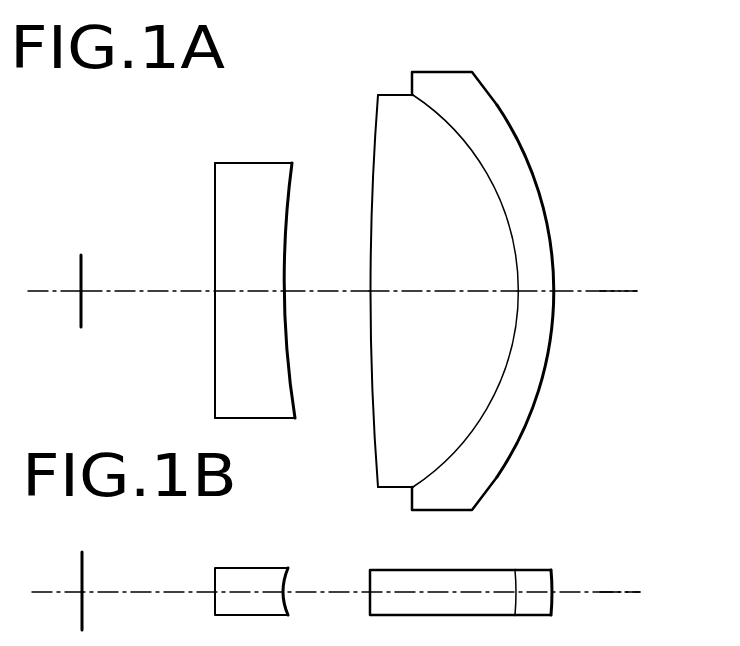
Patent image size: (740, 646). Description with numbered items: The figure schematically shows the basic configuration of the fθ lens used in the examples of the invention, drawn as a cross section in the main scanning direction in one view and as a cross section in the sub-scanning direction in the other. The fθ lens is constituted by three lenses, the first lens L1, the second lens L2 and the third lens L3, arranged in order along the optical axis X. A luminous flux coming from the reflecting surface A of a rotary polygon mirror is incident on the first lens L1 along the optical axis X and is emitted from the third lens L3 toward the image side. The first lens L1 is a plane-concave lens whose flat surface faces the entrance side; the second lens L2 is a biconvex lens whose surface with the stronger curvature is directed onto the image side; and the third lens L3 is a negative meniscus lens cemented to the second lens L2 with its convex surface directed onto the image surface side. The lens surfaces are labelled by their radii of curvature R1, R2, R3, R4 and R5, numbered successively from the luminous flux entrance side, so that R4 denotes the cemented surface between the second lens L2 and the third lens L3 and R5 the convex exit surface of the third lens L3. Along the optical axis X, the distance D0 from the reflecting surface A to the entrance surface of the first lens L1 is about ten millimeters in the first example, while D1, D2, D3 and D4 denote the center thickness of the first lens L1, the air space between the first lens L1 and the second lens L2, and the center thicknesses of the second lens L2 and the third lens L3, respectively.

In FIG. 1A, the first lens L1 is at (251, 264).
In FIG. 1B, the first lens L1 is at (253, 577).
In FIG. 1A, the second lens L2 is at (419, 262).
In FIG. 1B, the second lens L2 is at (435, 575).
In FIG. 1A, the third lens L3 is at (483, 264).
In FIG. 1B, the third lens L3 is at (537, 577).
In FIG. 1A, the radius of curvature of first lens surface R1 is at (215, 200).
In FIG. 1A, the radius of curvature of second lens surface R2 is at (292, 193).
In FIG. 1A, the radius of curvature of third lens surface R3 is at (373, 128).
In FIG. 1A, the radius of curvature of fourth lens surface R4 is at (428, 108).
In FIG. 1A, the radius of curvature of fifth lens surface R5 is at (498, 105).
In FIG. 1A, the distance from reflecting mirror surface to first lens D0 is at (135, 293).
In FIG. 1A, the center thickness of first lens D1 is at (230, 293).
In FIG. 1A, the air space between first and second lenses D2 is at (317, 293).
In FIG. 1A, the center thickness of second lens D3 is at (408, 293).
In FIG. 1A, the center thickness of third lens D4 is at (527, 293).
In FIG. 1A, the reflecting surface A is at (83, 288).
In FIG. 1B, the reflecting surface A is at (83, 589).
In FIG. 1A, the optical axis X is at (617, 291).
In FIG. 1B, the optical axis X is at (607, 593).